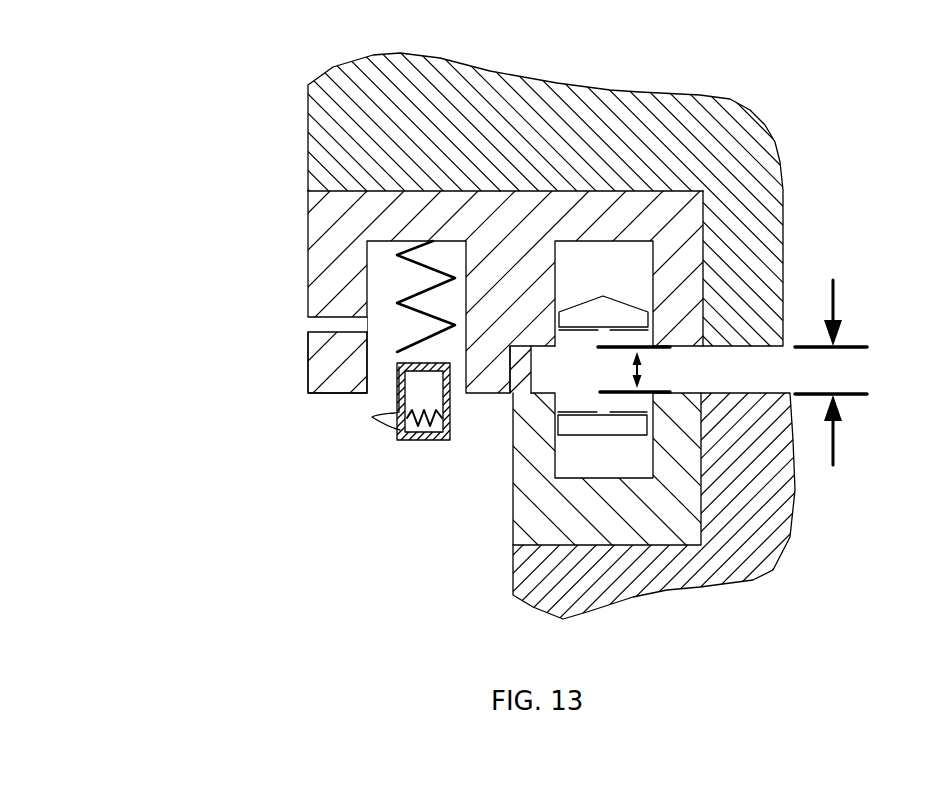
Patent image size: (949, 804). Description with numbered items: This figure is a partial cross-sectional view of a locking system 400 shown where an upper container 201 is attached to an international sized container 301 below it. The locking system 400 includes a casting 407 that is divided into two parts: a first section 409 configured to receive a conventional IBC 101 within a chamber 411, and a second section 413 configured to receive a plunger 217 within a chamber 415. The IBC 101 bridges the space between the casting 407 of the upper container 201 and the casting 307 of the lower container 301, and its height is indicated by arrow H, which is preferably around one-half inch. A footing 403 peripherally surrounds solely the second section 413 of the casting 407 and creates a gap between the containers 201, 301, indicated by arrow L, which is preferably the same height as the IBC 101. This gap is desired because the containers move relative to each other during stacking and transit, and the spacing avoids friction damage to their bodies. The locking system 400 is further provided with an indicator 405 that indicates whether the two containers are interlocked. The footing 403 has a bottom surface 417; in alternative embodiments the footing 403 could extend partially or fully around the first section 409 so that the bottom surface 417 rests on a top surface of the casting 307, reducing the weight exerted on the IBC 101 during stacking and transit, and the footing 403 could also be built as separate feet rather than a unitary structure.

The locking system 400 is at (150, 60).
The container 201 is at (757, 117).
The second section 413 is at (392, 182).
The first section 409 is at (623, 183).
The casting 407 is at (705, 210).
The chamber 411 is at (648, 266).
The chamber 415 is at (362, 285).
The indicator 405 is at (327, 315).
The footing 403 is at (308, 385).
The plunger 217 is at (400, 442).
The bottom surface 417 is at (473, 405).
The IBC 101 is at (510, 403).
The casting 307 is at (702, 523).
The container 301 is at (775, 573).
The arrow H is at (642, 373).
The arrow L is at (833, 299).